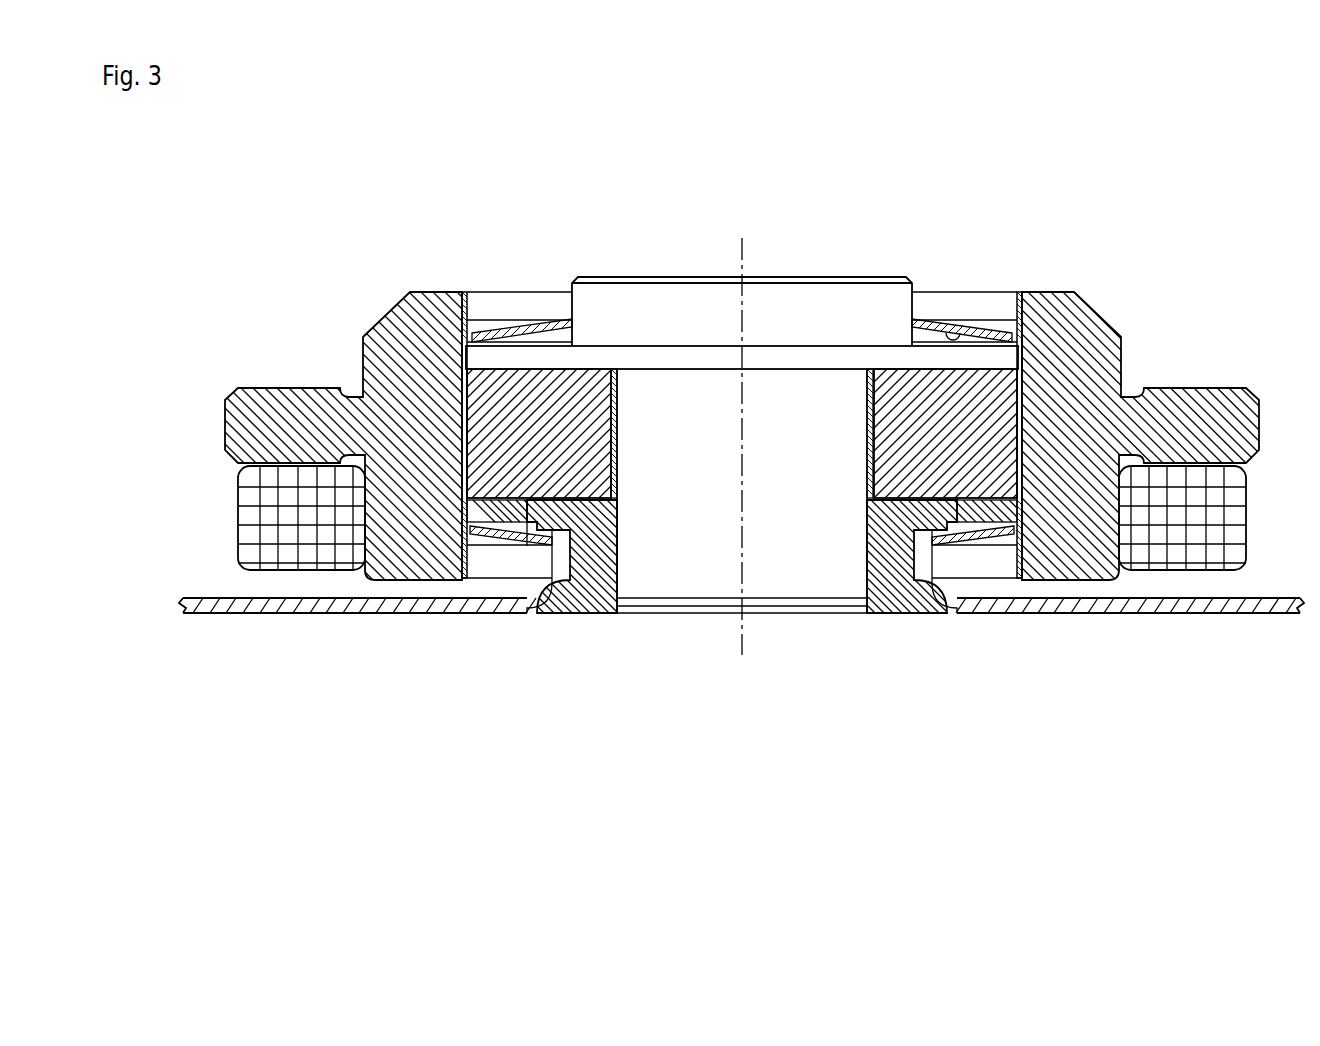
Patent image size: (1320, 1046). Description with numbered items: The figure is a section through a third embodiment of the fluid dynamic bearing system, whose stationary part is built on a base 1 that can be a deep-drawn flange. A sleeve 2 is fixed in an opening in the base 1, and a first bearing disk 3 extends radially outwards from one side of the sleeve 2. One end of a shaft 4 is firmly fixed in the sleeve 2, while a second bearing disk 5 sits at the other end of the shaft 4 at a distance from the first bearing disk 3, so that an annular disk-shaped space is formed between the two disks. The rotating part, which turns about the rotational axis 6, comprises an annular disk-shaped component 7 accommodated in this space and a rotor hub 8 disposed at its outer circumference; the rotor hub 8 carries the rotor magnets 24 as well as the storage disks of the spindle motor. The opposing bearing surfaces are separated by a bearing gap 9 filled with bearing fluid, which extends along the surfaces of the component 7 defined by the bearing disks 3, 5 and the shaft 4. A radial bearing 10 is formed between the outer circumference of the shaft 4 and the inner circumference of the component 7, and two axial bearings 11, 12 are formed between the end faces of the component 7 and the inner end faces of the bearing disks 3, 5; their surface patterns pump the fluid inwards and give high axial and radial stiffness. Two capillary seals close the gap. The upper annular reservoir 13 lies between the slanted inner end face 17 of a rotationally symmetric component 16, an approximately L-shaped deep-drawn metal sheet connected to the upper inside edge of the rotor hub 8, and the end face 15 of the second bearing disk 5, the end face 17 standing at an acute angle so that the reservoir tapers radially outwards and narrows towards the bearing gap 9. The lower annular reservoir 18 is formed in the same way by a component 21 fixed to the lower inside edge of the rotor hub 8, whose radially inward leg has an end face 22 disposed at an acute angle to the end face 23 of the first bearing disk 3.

The base 1 is at (285, 612).
The sleeve 2 is at (593, 565).
The first bearing disk 3 is at (490, 510).
The shaft 4 is at (810, 578).
The second bearing disk 5 is at (562, 360).
The rotational axis 6 is at (742, 265).
The annular disk-shaped component 7 is at (488, 417).
The rotor hub 8 is at (276, 413).
The bearing gap 9 is at (617, 450).
The radial bearing 10 is at (615, 470).
The axial bearing 11 is at (527, 546).
The axial bearing 12 is at (528, 370).
The annular reservoir 13 is at (920, 337).
The end face of the second bearing disk 15 is at (1018, 332).
The rotationally symmetric component 16 is at (1022, 325).
The slanted inner end face 17 is at (967, 335).
The annular reservoir 18 is at (957, 495).
The component 21 is at (1017, 557).
The end face 22 is at (978, 500).
The end face of the first bearing disk 23 is at (975, 493).
The rotor magnets 24 is at (1213, 517).